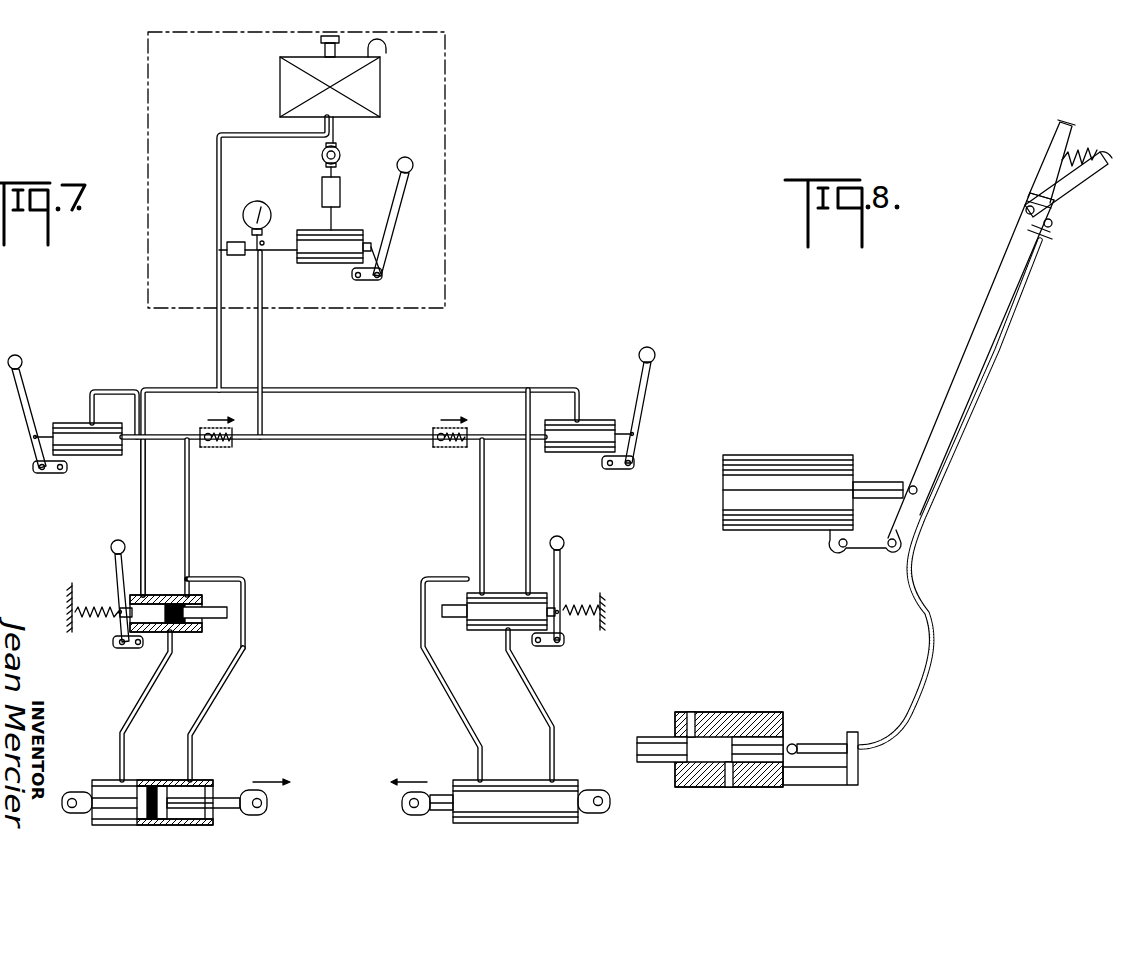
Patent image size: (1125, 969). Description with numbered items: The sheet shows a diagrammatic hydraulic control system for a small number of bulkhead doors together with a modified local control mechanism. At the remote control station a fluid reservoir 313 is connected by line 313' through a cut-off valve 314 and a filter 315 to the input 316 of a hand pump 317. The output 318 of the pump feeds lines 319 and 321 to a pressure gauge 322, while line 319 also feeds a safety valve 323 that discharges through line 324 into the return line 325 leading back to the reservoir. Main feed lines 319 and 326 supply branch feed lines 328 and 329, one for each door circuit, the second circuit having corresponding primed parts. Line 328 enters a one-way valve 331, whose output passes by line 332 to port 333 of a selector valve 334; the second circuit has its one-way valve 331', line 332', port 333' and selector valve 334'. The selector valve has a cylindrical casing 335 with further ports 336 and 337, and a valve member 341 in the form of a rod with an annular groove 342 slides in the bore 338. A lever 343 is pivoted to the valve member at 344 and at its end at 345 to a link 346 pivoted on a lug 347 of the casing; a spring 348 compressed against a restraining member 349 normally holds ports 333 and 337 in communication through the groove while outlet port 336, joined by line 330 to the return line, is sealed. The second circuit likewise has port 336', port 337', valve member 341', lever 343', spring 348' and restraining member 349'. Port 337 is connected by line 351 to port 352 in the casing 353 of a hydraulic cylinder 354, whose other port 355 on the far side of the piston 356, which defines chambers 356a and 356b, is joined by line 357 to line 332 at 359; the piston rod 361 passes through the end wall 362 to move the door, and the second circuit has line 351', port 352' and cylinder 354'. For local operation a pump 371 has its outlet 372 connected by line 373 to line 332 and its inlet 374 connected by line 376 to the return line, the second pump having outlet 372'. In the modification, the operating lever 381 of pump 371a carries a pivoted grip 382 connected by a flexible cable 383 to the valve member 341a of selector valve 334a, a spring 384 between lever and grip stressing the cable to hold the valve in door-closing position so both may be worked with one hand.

In FIG. 7, the fluid reservoir 313 is at (357, 76).
In FIG. 7, the line 313' is at (359, 130).
In FIG. 7, the cut-off valve 314 is at (320, 155).
In FIG. 7, the filter 315 is at (340, 183).
In FIG. 7, the input 316 is at (334, 226).
In FIG. 7, the hand pump 317 is at (338, 264).
In FIG. 7, the output 318 is at (292, 258).
In FIG. 7, the line 319 is at (275, 253).
In FIG. 7, the line 321 is at (264, 240).
In FIG. 7, the pressure gauge 322 is at (255, 200).
In FIG. 7, the safety valve 323 is at (227, 246).
In FIG. 7, the line 324 is at (216, 272).
In FIG. 7, the return line 325 is at (216, 163).
In FIG. 7, the main feed line 326 is at (263, 345).
In FIG. 7, the branch feed line 328 is at (246, 448).
In FIG. 7, the branch feed line 329 is at (349, 448).
In FIG. 7, the line 330 is at (140, 490).
In FIG. 7, the one-way valve 331 is at (225, 422).
In FIG. 7, the one-way valve 331' is at (435, 453).
In FIG. 7, the line 332 is at (212, 517).
In FIG. 7, the line 332' is at (447, 516).
In FIG. 7, the port 333 is at (166, 590).
In FIG. 7, the port 333' is at (507, 592).
In FIG. 7, the selector valve 334 is at (196, 648).
In FIG. 7, the selector valve 334' is at (459, 679).
In FIG. 7, the casing 335 is at (200, 599).
In FIG. 7, the port 336 is at (112, 566).
In FIG. 7, the port 336' is at (577, 491).
In FIG. 7, the port 337 is at (133, 665).
In FIG. 7, the port 337' is at (543, 705).
In FIG. 7, the bore 338 is at (247, 628).
In FIG. 7, the valve member 341 is at (209, 605).
In FIG. 7, the valve member 341' is at (451, 616).
In FIG. 7, the annular groove 342 is at (171, 656).
In FIG. 7, the lever 343 is at (89, 585).
In FIG. 7, the lever 343' is at (548, 591).
In FIG. 7, the pivotal connection 344 is at (119, 620).
In FIG. 7, the pivotal connection 345 is at (123, 638).
In FIG. 7, the link 346 is at (117, 651).
In FIG. 7, the lug 347 is at (130, 652).
In FIG. 7, the spring 348 is at (82, 587).
In FIG. 7, the spring 348' is at (608, 589).
In FIG. 7, the restraining member 349 is at (47, 607).
In FIG. 7, the restraining member 349' is at (634, 612).
In FIG. 7, the line 351 is at (89, 754).
In FIG. 7, the line 351' is at (509, 705).
In FIG. 7, the port 352 is at (135, 789).
In FIG. 7, the port 352' is at (500, 782).
In FIG. 7, the casing 353 is at (211, 781).
In FIG. 7, the hydraulic cylinder 354 is at (222, 763).
In FIG. 7, the hydraulic cylinder 354' is at (584, 763).
In FIG. 7, the port 355 is at (200, 775).
In FIG. 7, the piston 356 is at (168, 790).
In FIG. 7, the chamber 356a is at (100, 822).
In FIG. 7, the chamber 356b is at (178, 790).
In FIG. 7, the line 357 is at (226, 672).
In FIG. 7, the junction 359 is at (196, 577).
In FIG. 7, the piston rod 361 is at (228, 790).
In FIG. 7, the end wall 362 is at (214, 816).
In FIG. 7, the pump 371 is at (88, 456).
In FIG. 7, the outlet 372 is at (94, 424).
In FIG. 7, the outlet 372' is at (600, 408).
In FIG. 7, the line 373 is at (166, 434).
In FIG. 7, the inlet 374 is at (85, 424).
In FIG. 7, the line 376 is at (134, 390).
In FIG. 8, the pump 371a is at (802, 455).
In FIG. 8, the operating lever 381 is at (958, 338).
In FIG. 8, the pivoted grip 382 is at (1072, 205).
In FIG. 8, the flexible cable 383 is at (991, 375).
In FIG. 8, the spring 384 is at (1080, 158).
In FIG. 8, the selector valve 334a is at (739, 712).
In FIG. 8, the valve member 341a is at (766, 745).